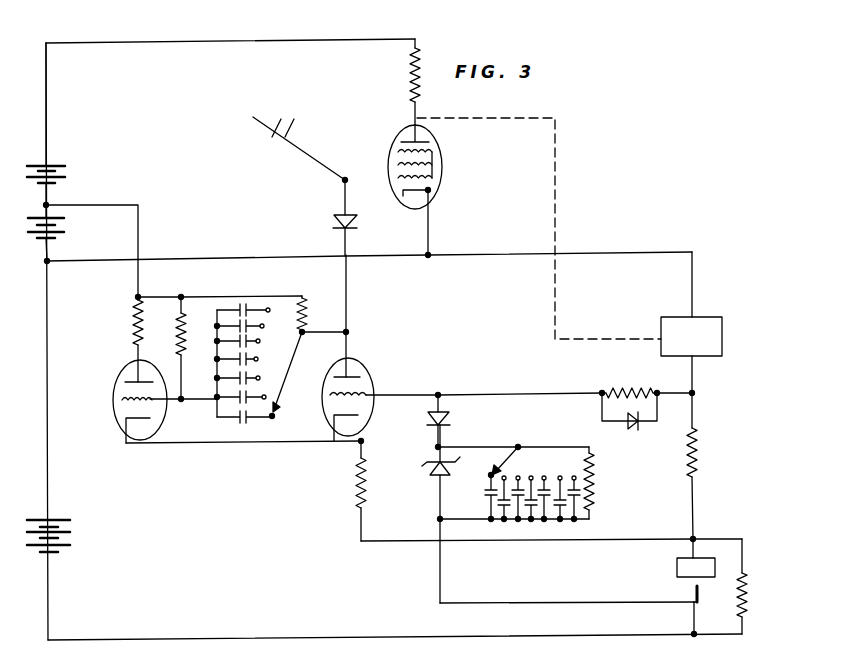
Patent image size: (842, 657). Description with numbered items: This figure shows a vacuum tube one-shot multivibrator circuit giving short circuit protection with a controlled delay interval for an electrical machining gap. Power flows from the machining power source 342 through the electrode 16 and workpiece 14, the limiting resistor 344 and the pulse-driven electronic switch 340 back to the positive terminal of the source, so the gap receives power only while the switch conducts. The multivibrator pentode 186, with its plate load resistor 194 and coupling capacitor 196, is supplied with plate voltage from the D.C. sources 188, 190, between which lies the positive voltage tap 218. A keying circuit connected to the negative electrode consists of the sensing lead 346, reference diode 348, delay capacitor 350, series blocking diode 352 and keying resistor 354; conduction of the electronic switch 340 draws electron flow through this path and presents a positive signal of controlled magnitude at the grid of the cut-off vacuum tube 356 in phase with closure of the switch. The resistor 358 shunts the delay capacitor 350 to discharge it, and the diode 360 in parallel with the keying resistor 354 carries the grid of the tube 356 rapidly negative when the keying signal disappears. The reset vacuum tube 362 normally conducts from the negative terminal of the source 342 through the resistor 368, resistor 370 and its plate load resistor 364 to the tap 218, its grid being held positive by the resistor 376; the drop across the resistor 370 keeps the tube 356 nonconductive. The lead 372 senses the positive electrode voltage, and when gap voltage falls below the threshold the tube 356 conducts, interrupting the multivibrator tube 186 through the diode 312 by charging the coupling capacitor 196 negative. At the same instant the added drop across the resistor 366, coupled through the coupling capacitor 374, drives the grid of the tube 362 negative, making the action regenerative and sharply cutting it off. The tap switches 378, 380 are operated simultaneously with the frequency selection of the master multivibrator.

The workpiece 14 is at (677, 566).
The electrode 16 is at (695, 594).
The multivibrator pentode 186 is at (410, 194).
The D.C. source 188 is at (62, 226).
The D.C. source 190 is at (63, 172).
The plate load resistor 194 is at (418, 94).
The coupling capacitor 196 is at (262, 133).
The positive voltage tap 218 is at (104, 205).
The diode 312 is at (333, 228).
The electronic switch 340 is at (705, 349).
The machining power source 342 is at (70, 538).
The limiting resistor 344 is at (698, 445).
The sensing lead 346 is at (582, 603).
The reference diode 348 is at (432, 463).
The delay capacitor 350 is at (540, 522).
The series blocking diode 352 is at (450, 421).
The keying resistor 354 is at (631, 390).
The vacuum tube 356 is at (374, 380).
The resistor 358 is at (596, 490).
The diode 360 is at (636, 432).
The reset vacuum tube 362 is at (120, 374).
The plate load resistor 364 is at (133, 319).
The resistor 366 is at (322, 288).
The resistor 368 is at (746, 588).
The resistor 370 is at (357, 488).
The lead 372 is at (612, 541).
The coupling capacitor 374 is at (230, 424).
The resistor 376 is at (181, 333).
The tap switch 378 is at (292, 372).
The tap switch 380 is at (520, 446).